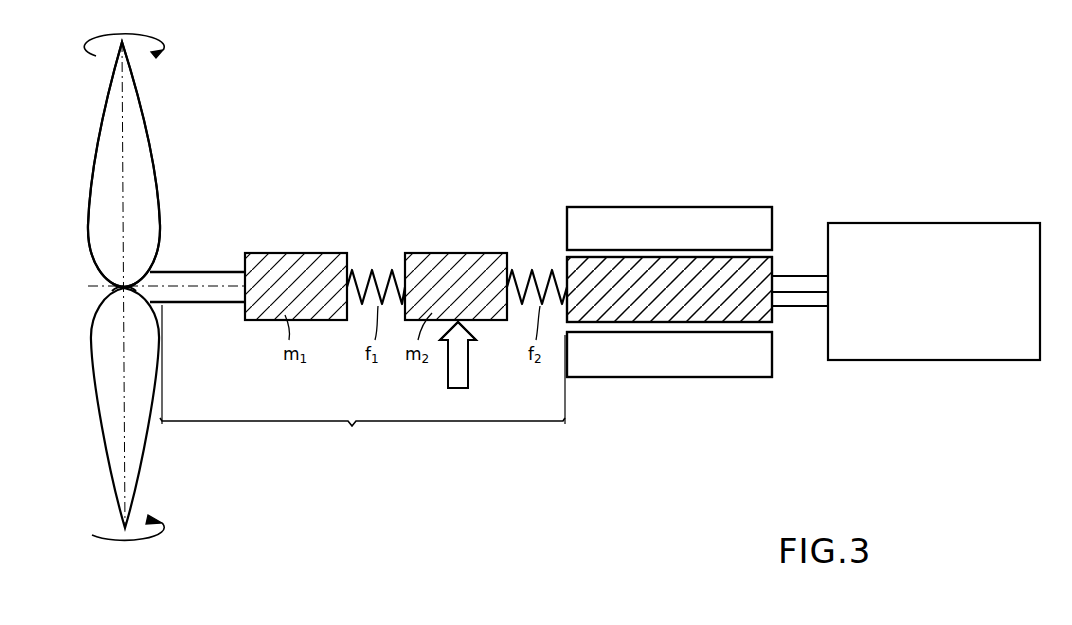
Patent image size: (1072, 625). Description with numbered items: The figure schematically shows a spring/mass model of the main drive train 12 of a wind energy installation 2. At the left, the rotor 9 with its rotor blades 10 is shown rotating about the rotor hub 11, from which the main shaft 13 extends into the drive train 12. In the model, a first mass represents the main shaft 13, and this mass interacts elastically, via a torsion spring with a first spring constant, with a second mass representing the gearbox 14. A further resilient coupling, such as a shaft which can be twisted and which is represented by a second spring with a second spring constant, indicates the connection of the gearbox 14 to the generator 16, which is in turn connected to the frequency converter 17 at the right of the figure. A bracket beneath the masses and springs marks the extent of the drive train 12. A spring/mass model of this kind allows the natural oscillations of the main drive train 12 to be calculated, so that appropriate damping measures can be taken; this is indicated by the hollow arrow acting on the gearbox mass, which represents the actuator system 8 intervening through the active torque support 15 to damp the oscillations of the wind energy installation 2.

The wind energy installation 2 is at (620, 181).
The actuator system 8 is at (449, 373).
The rotor 9 is at (148, 125).
The rotor blade 10 is at (142, 183).
The rotor hub 11 is at (116, 287).
The drive train 12 is at (362, 381).
The main shaft 13 is at (184, 297).
The gearbox 14 is at (450, 262).
The torque support 15 is at (472, 365).
The generator 16 is at (699, 223).
The frequency converter 17 is at (920, 240).